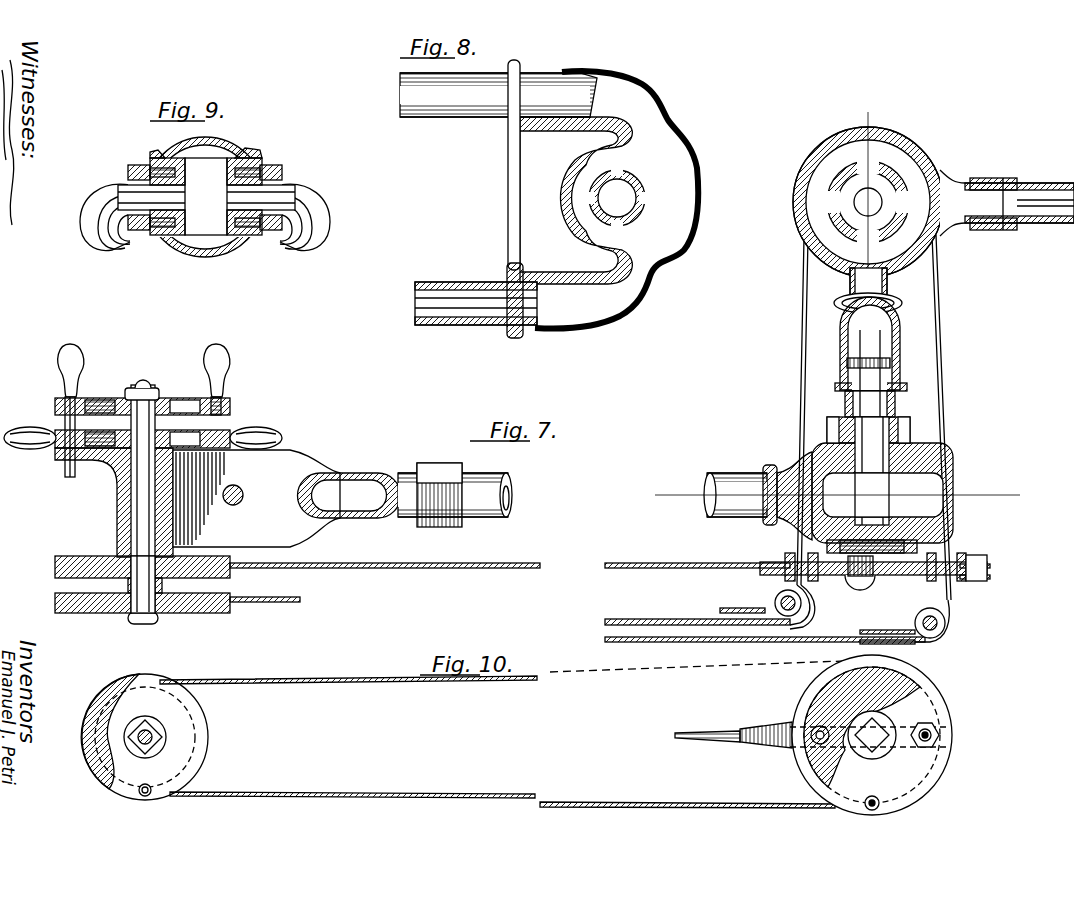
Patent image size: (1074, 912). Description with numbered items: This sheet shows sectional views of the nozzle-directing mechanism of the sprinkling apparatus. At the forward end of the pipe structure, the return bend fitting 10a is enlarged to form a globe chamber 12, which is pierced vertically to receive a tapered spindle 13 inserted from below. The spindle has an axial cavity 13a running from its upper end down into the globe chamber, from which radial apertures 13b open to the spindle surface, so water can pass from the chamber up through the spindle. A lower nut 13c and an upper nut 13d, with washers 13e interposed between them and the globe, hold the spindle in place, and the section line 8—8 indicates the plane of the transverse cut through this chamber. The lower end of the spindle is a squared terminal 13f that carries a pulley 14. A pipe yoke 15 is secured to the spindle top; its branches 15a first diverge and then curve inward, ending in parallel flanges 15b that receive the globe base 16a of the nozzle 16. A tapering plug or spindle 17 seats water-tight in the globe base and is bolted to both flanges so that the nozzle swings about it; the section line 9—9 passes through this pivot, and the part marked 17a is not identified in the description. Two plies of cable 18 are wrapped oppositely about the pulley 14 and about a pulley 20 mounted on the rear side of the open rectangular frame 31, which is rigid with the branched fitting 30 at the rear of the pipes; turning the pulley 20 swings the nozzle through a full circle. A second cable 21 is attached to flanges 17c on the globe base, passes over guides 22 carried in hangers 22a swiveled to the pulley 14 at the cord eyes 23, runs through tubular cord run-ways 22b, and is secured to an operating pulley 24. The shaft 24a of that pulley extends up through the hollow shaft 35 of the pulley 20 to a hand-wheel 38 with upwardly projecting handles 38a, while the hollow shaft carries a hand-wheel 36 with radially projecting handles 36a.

In FIG. 7, the section line 8— 8 is at (831, 495).
In FIG. 7, the section line 9— 9 is at (910, 290).
In FIG. 8, the return bend fitting 10a is at (573, 305).
In FIG. 8, the globe chamber 12 is at (647, 153).
In FIG. 7, the globe chamber 12 is at (838, 487).
In FIG. 8, the spindle 13 is at (662, 202).
In FIG. 7, the spindle 13 is at (904, 501).
In FIG. 8, the axial cavity 13a is at (625, 203).
In FIG. 7, the axial cavity 13a is at (870, 440).
In FIG. 8, the radial apertures 13b is at (612, 222).
In FIG. 7, the radial apertures 13b is at (900, 510).
In FIG. 7, the lower nut 13c is at (922, 554).
In FIG. 7, the upper nut 13d is at (905, 432).
In FIG. 7, the washers 13e is at (920, 446).
In FIG. 7, the squared terminal 13f is at (864, 578).
In FIG. 7, the pulley 14 is at (975, 585).
In FIG. 10, the pulley 14 is at (935, 790).
In FIG. 7, the pipe yoke 15 is at (902, 352).
In FIG. 7, the yoke branches 15a is at (842, 320).
In FIG. 9, the parallel flanges 15b is at (144, 166).
In FIG. 7, the nozzle 16 is at (1055, 224).
In FIG. 9, the globe base 16a is at (213, 252).
In FIG. 9, the tapering plug or spindle 17 is at (200, 222).
In FIG. 7, the tapering plug or spindle 17 is at (838, 183).
In FIG. 9, the wedge 17a is at (250, 152).
In FIG. 7, the flanges 17c is at (903, 156).
In FIG. 7, the cable 18 is at (380, 569).
In FIG. 10, the cable 18 is at (390, 681).
In FIG. 7, the pulley 20 is at (250, 570).
In FIG. 10, the pulley 20 is at (205, 722).
In FIG. 7, the cable 21 is at (266, 603).
In FIG. 10, the cable 21 is at (710, 660).
In FIG. 7, the guides 22 is at (780, 606).
In FIG. 7, the hangers 22a is at (962, 612).
In FIG. 7, the tubular cord run-ways 22b is at (945, 645).
In FIG. 10, the tubular cord run-ways 22b is at (992, 661).
In FIG. 7, the eyes 23 is at (795, 562).
In FIG. 10, the eyes 23 is at (935, 735).
In FIG. 7, the operating pulley 24 is at (202, 605).
In FIG. 7, the shaft 24a is at (143, 530).
In FIG. 10, the shaft 24a is at (148, 735).
In FIG. 7, the branched fitting 30 is at (443, 487).
In FIG. 7, the open rectangular frame 31 is at (292, 473).
In FIG. 7, the hollow shaft 35 is at (117, 514).
In FIG. 10, the hollow shaft 35 is at (165, 745).
In FIG. 7, the hand-wheel 36 is at (232, 431).
In FIG. 7, the radially projecting handles 36a is at (270, 436).
In FIG. 7, the operating hand-wheel 38 is at (125, 410).
In FIG. 7, the upwardly projecting handles 38a is at (235, 379).